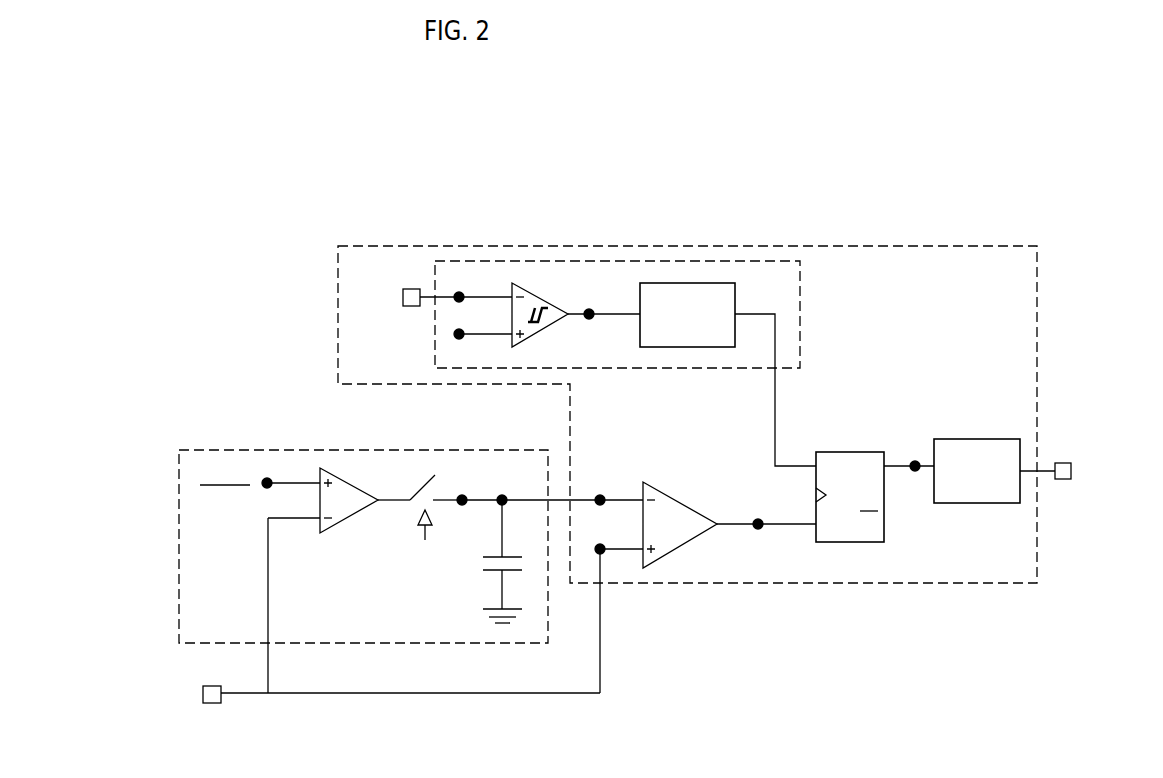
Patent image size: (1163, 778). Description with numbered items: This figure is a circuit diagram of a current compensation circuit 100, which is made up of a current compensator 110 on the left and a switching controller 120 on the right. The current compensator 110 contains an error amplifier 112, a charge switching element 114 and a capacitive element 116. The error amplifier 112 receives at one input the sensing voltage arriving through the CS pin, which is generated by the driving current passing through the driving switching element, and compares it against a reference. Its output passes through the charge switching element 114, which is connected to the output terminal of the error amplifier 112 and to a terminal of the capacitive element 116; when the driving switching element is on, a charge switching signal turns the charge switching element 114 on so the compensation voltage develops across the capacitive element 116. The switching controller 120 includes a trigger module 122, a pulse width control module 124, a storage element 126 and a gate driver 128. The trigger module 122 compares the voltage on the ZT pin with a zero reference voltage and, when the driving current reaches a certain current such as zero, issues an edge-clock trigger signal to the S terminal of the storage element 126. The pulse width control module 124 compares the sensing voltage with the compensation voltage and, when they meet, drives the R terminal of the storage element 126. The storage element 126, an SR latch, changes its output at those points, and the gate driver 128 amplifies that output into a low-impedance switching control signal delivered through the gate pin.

The current compensation circuit 100 is at (482, 163).
The current compensator 110 is at (180, 545).
The error amplifier 112 is at (330, 468).
The charge switching element 114 is at (433, 474).
The capacitive element 116 is at (522, 570).
The switching controller 120 is at (923, 247).
The trigger module 122 is at (655, 260).
The pulse width control module 124 is at (692, 573).
The storage element 126 is at (860, 542).
The gate driver 128 is at (1012, 503).